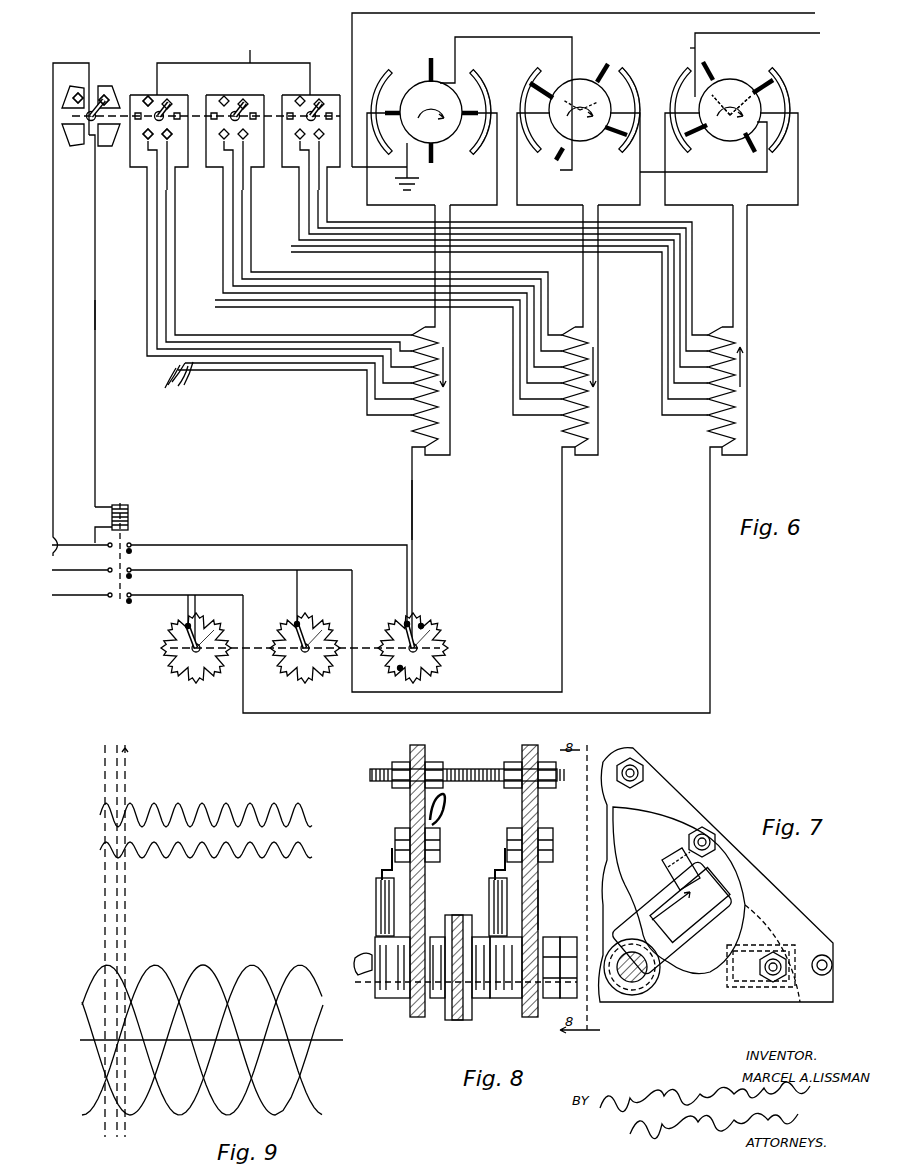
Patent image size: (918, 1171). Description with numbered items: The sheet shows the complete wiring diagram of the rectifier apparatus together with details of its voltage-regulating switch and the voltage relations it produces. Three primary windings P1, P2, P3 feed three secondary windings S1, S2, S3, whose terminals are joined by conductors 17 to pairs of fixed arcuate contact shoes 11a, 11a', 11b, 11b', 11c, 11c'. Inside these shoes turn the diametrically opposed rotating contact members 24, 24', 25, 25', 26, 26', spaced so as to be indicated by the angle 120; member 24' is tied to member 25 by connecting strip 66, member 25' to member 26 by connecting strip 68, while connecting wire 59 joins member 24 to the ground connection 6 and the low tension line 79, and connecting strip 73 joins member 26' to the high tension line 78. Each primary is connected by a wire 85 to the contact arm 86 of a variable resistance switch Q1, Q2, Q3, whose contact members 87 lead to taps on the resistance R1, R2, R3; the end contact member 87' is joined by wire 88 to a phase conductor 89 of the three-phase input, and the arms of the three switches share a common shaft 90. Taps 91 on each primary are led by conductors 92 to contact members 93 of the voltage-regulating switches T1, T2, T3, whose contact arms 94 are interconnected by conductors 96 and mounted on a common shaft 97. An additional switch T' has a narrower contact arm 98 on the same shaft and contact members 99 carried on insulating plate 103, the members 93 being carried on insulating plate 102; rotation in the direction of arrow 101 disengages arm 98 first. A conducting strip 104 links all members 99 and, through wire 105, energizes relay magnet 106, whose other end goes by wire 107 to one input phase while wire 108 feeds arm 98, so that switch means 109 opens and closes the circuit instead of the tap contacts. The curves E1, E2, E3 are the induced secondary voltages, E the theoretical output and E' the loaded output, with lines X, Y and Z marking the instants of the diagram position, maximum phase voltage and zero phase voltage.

In FIG. 6, the ground connection 6 is at (418, 182).
In FIG. 6, the fixed arcuate contact shoe 11a is at (421, 104).
In FIG. 6, the fixed arcuate contact shoe 11a' is at (494, 107).
In FIG. 6, the fixed arcuate contact shoe 11b is at (580, 98).
In FIG. 6, the fixed arcuate contact shoe 11b' is at (629, 101).
In FIG. 6, the fixed arcuate contact shoe 11c is at (719, 110).
In FIG. 6, the fixed arcuate contact shoe 11c' is at (794, 106).
In FIG. 6, the electrical conductor 17 is at (480, 195).
In FIG. 6, the rotating contact member 24 is at (447, 156).
In FIG. 6, the rotating contact member 24' is at (430, 60).
In FIG. 6, the rotating contact member 25 is at (596, 61).
In FIG. 6, the rotating contact member 25' is at (590, 154).
In FIG. 6, the rotating contact member 26 is at (734, 149).
In FIG. 6, the rotating contact member 26' is at (725, 66).
In FIG. 6, the connecting wire 59 is at (368, 177).
In FIG. 6, the connecting strip 66 is at (500, 37).
In FIG. 6, the connecting strip 68 is at (672, 172).
In FIG. 6, the connecting strip 73 is at (682, 48).
In FIG. 6, the high tension line 78 is at (730, 33).
In FIG. 6, the low tension line 79 is at (388, 13).
In FIG. 6, the wire 85 is at (414, 515).
In FIG. 6, the contact arm 86 is at (423, 625).
In FIG. 6, the contact member 87 is at (381, 677).
In FIG. 6, the contact member 87' is at (424, 598).
In FIG. 6, the wire 88 is at (192, 572).
In FIG. 6, the phase conductor 89 is at (105, 573).
In FIG. 6, the common shaft 90 is at (290, 640).
In FIG. 6, the taps 91 is at (392, 345).
In FIG. 6, the conductors 92 is at (178, 384).
In FIG. 6, the contact member 93 is at (160, 100).
In FIG. 8, the contact member 93 is at (384, 858).
In FIG. 7, the contact member 93 is at (665, 862).
In FIG. 6, the contact arm 94 is at (145, 95).
In FIG. 7, the contact arm 94 is at (745, 915).
In FIG. 6, the conductors 96 is at (238, 63).
In FIG. 6, the common shaft 97 is at (183, 63).
In FIG. 8, the common shaft 97 is at (376, 998).
In FIG. 7, the common shaft 97 is at (634, 990).
In FIG. 6, the contact arm 98 is at (100, 98).
In FIG. 7, the contact arm 98 is at (718, 895).
In FIG. 6, the contact member 99 is at (88, 96).
In FIG. 8, the contact member 99 is at (497, 858).
In FIG. 7, the contact member 99 is at (676, 872).
In FIG. 7, the arrow 101 is at (665, 903).
In FIG. 8, the insulating supporting plate 102 is at (426, 888).
In FIG. 7, the insulating supporting plate 102 is at (620, 890).
In FIG. 8, the insulating supporting plate 103 is at (539, 797).
In FIG. 7, the insulating supporting plate 103 is at (668, 790).
In FIG. 6, the conducting strip 104 is at (95, 175).
In FIG. 8, the conducting strip 104 is at (540, 905).
In FIG. 7, the conducting strip 104 is at (770, 930).
In FIG. 6, the wire 105 is at (95, 300).
In FIG. 6, the relay magnet 106 is at (128, 512).
In FIG. 6, the wire 107 is at (95, 525).
In FIG. 6, the wire 108 is at (57, 352).
In FIG. 6, the switch means 109 is at (121, 600).
In FIG. 6, the 120 degree angle 120 is at (732, 105).
In FIG. 6, the voltage-regulating switch T1 is at (181, 150).
In FIG. 8, the voltage-regulating switch T1 is at (387, 828).
In FIG. 6, the voltage-regulating switch T2 is at (244, 144).
In FIG. 6, the voltage-regulating switch T3 is at (306, 98).
In FIG. 6, the additional switch T' is at (89, 129).
In FIG. 8, the additional switch T' is at (491, 833).
In FIG. 6, the secondary winding S1 is at (437, 440).
In FIG. 6, the secondary winding S2 is at (590, 438).
In FIG. 6, the secondary winding S3 is at (735, 340).
In FIG. 6, the primary winding P1 is at (412, 452).
In FIG. 6, the primary winding P2 is at (560, 440).
In FIG. 6, the primary winding P3 is at (708, 442).
In FIG. 6, the variable resistance switching means Q1 is at (432, 642).
In FIG. 6, the variable resistance switching means Q2 is at (310, 676).
In FIG. 6, the variable resistance switching means Q3 is at (194, 682).
In FIG. 6, the resistance means R1 is at (452, 666).
In FIG. 6, the resistance means R2 is at (283, 672).
In FIG. 6, the resistance means R3 is at (172, 664).
In FIG. 9, the total no-load output voltage curve E is at (197, 814).
In FIG. 9, the actual output voltage curve E' is at (197, 849).
In FIG. 9, the secondary voltage curve E1 is at (195, 1040).
In FIG. 9, the secondary voltage curve E2 is at (200, 1045).
In FIG. 9, the secondary voltage curve E3 is at (200, 1040).
In FIG. 9, the vertical line X— X is at (130, 938).
In FIG. 9, the vertical line Y— Y is at (100, 945).
In FIG. 9, the vertical line Z— Z is at (116, 955).